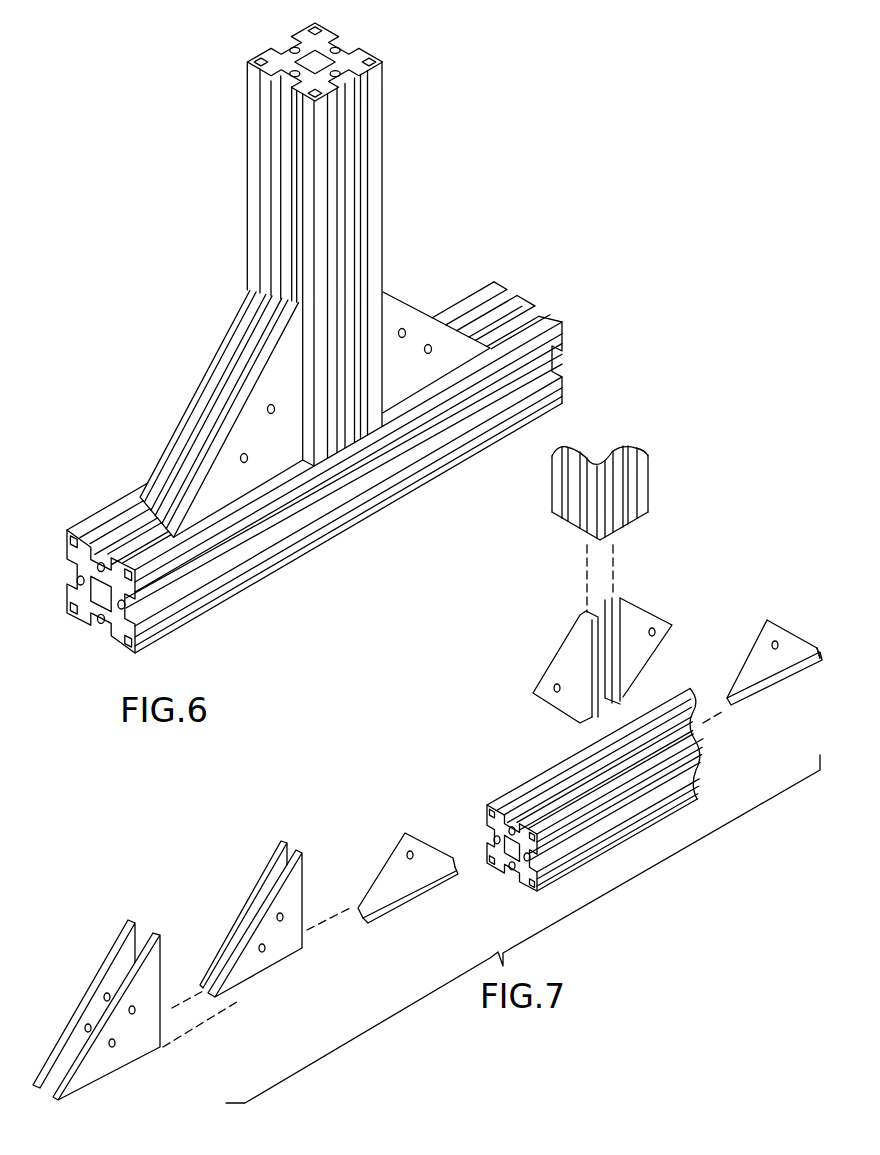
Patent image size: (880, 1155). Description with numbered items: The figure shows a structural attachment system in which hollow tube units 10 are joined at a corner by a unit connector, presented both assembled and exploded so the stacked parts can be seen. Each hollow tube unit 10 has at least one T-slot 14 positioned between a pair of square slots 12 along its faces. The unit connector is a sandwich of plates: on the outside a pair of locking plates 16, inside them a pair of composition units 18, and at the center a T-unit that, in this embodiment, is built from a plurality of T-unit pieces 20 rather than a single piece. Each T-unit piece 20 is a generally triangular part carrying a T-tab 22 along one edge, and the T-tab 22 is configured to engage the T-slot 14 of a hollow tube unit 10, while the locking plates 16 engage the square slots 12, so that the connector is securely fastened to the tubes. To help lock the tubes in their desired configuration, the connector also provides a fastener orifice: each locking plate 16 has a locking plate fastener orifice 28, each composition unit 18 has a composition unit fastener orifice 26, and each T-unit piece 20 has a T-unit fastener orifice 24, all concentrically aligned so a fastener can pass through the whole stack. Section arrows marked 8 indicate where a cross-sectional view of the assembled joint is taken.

In FIG. 6, the section line 8- 8 is at (53, 615).
In FIG. 6, the hollow tube unit 10 is at (321, 338).
In FIG. 7, the hollow tube unit 10 is at (573, 660).
In FIG. 6, the square slots 12 is at (363, 82).
In FIG. 7, the square slots 12 is at (633, 486).
In FIG. 6, the T-slot 14 is at (348, 118).
In FIG. 7, the T-slot 14 is at (626, 517).
In FIG. 6, the locking plate 16 is at (400, 310).
In FIG. 7, the locking plate 16 is at (120, 948).
In FIG. 6, the composition unit 18 is at (239, 362).
In FIG. 7, the composition unit 18 is at (273, 873).
In FIG. 6, the T-unit piece 20 is at (233, 396).
In FIG. 7, the T-unit piece 20 is at (569, 664).
In FIG. 7, the T-tab 22 is at (591, 642).
In FIG. 7, the T-unit fastener orifice 24 is at (558, 692).
In FIG. 7, the composition unit fastener orifice 26 is at (284, 918).
In FIG. 6, the locking plate fastener orifice 28 is at (246, 463).
In FIG. 7, the locking plate fastener orifice 28 is at (104, 998).